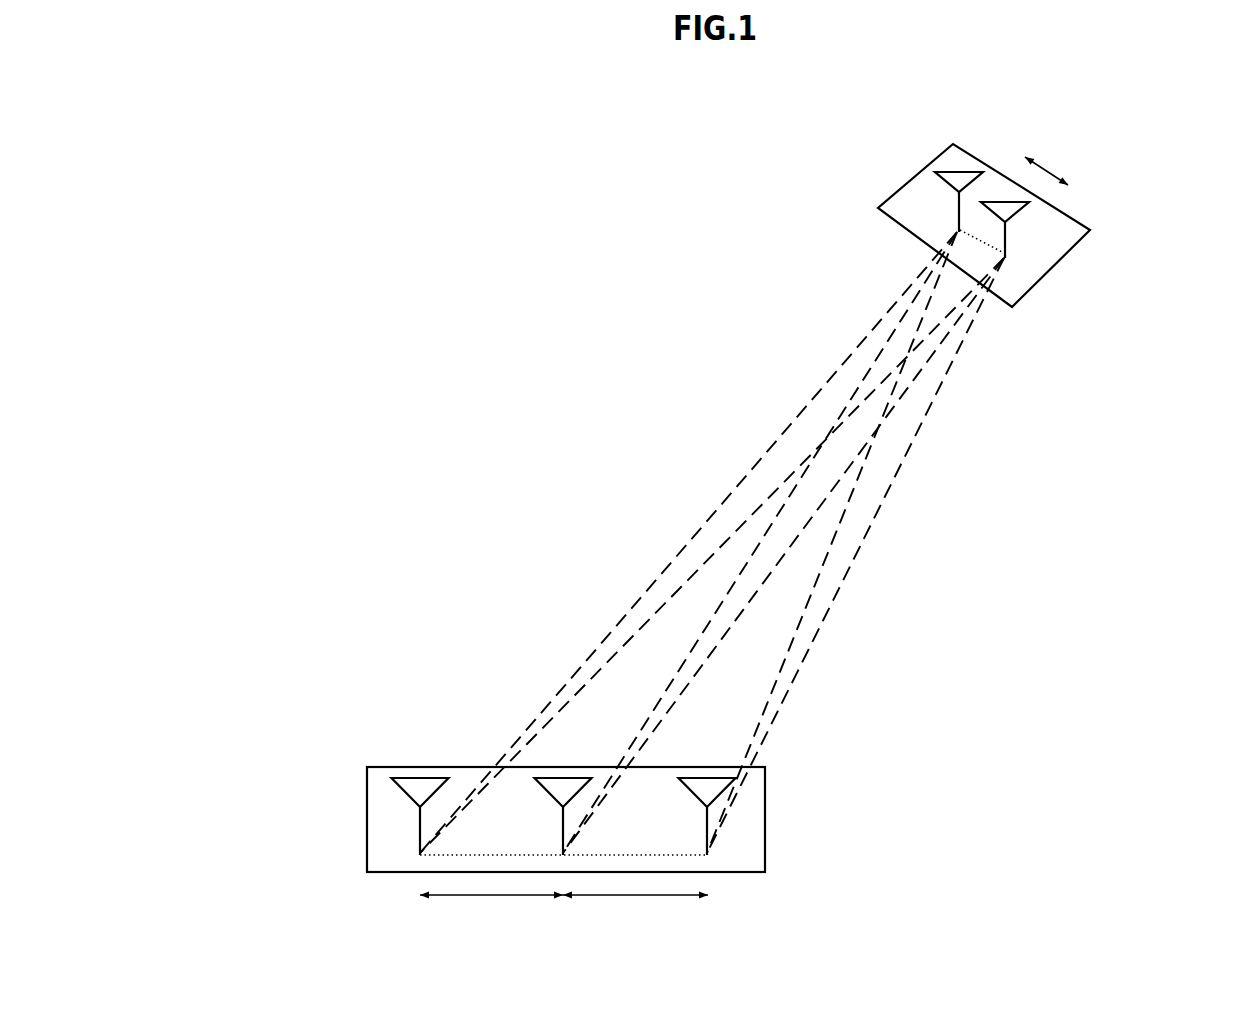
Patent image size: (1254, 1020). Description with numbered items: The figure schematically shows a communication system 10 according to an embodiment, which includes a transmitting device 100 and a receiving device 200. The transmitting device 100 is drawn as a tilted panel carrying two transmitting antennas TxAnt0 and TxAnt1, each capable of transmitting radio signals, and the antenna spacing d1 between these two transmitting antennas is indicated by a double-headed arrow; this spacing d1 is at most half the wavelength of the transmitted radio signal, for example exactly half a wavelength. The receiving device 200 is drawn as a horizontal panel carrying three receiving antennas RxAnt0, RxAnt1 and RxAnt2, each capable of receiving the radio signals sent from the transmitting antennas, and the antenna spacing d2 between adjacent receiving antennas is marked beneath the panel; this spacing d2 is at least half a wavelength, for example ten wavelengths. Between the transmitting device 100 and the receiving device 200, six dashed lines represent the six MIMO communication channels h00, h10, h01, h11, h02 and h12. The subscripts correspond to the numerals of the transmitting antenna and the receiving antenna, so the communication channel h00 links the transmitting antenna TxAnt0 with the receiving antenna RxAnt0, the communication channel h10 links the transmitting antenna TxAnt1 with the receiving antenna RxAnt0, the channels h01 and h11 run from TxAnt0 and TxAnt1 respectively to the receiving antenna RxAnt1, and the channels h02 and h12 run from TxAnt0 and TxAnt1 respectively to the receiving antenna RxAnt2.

The communication system 10 is at (380, 170).
The transmitting device 100 is at (1092, 231).
The receiving device 200 is at (767, 812).
The transmitting antenna TxAnt0 is at (957, 215).
The transmitting antenna TxAnt1 is at (1005, 245).
The receiving antenna RxAnt0 is at (420, 807).
The receiving antenna RxAnt1 is at (563, 808).
The receiving antenna RxAnt2 is at (707, 832).
The transmitting antenna spacing d1 is at (1054, 160).
The receiving antenna spacing d2 is at (564, 910).
The communication channel h00 is at (638, 599).
The communication channel h10 is at (624, 647).
The communication channel h01 is at (646, 737).
The communication channel h11 is at (686, 693).
The communication channel h02 is at (818, 581).
The communication channel h12 is at (862, 542).